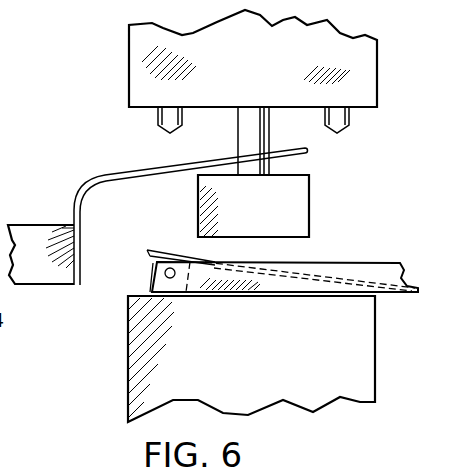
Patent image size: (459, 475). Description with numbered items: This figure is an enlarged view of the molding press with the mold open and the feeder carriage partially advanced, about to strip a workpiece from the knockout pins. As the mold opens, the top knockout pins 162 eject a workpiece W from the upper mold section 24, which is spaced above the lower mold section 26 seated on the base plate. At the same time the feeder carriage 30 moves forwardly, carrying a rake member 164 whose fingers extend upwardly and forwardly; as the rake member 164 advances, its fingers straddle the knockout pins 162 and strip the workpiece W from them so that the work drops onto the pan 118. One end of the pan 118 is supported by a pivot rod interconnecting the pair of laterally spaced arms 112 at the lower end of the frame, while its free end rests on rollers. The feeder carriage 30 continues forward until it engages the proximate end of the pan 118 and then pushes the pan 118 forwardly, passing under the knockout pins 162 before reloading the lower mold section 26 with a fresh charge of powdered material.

The upper mold section 24 is at (266, 70).
The top knockout pins 162 is at (238, 142).
The workpiece W is at (264, 224).
The rake member 164 is at (153, 172).
The feeder carriage 30 is at (58, 276).
The arms 112 is at (283, 282).
The pan 118 is at (322, 275).
The lower mold section 26 is at (270, 377).